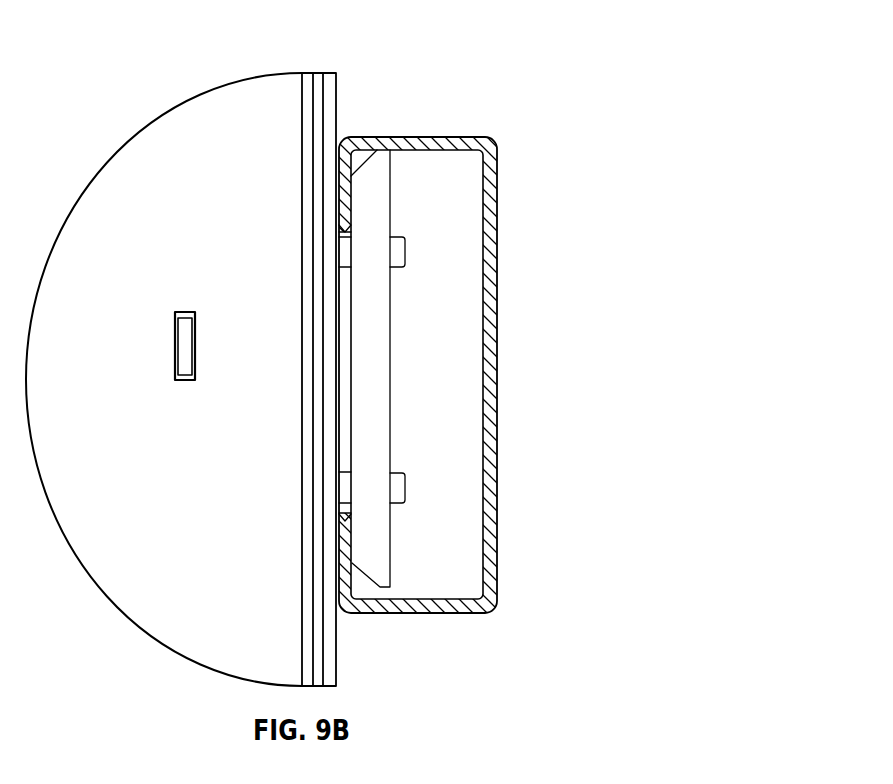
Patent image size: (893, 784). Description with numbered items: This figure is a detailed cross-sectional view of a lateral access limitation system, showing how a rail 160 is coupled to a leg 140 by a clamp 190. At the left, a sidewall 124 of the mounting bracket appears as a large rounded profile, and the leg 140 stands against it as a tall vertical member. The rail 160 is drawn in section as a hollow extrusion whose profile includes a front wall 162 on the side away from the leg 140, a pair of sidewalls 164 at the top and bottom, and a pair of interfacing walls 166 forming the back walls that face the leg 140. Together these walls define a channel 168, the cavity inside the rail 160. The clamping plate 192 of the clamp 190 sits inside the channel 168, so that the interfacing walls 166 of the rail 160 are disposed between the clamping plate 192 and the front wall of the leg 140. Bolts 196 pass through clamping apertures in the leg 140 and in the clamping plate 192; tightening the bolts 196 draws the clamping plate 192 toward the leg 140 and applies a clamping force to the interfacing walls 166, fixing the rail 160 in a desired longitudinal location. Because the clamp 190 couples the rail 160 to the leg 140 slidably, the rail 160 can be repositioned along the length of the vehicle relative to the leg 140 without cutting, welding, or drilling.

The sidewall 124 is at (216, 106).
The leg 140 is at (321, 82).
The rail 160 is at (485, 378).
The front wall 162 is at (490, 307).
The sidewall 164 is at (443, 142).
The interfacing wall 166 is at (343, 217).
The channel 168 is at (441, 563).
The clamp 190 is at (461, 368).
The clamping plate 192 is at (368, 405).
The bolt 196 is at (398, 310).